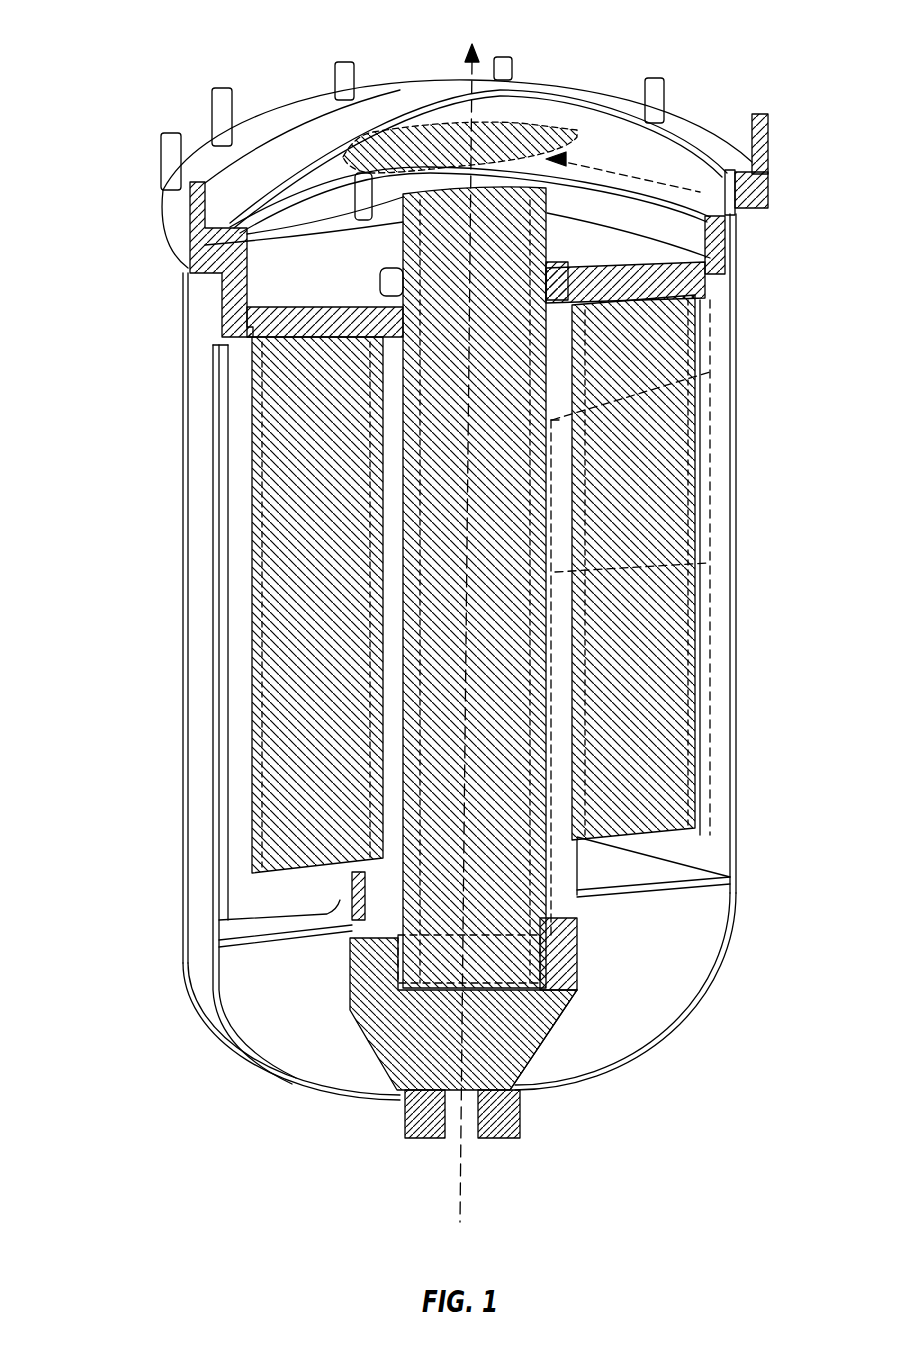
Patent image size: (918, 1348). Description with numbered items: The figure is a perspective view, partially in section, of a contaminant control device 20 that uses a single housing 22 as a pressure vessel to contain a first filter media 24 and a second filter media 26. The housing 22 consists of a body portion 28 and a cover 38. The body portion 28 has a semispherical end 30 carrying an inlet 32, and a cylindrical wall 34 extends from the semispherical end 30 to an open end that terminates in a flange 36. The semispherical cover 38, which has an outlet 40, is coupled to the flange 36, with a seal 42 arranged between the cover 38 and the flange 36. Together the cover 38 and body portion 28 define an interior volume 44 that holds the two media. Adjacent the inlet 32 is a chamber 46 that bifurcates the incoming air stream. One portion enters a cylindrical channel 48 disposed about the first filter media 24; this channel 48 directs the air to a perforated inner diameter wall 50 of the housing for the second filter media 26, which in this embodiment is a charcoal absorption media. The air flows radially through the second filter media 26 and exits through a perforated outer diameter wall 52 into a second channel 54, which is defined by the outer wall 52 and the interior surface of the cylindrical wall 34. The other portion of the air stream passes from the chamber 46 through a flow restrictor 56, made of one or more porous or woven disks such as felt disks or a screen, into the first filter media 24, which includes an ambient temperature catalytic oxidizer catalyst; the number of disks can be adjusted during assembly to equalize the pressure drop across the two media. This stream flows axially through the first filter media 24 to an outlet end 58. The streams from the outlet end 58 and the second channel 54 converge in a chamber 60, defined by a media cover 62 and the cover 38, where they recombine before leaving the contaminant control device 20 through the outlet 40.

The contaminant control device 20 is at (118, 46).
The housing 22 is at (720, 94).
The first filter media 24 is at (475, 733).
The second filter media 26 is at (288, 733).
The body portion 28 is at (182, 953).
The semispherical end 30 is at (280, 1076).
The inlet 32 is at (500, 1138).
The cylindrical wall 34 is at (734, 727).
The flange 36 is at (770, 192).
The cover 38 is at (556, 89).
The outlet 40 is at (468, 62).
The seal 42 is at (188, 258).
The interior volume 44 is at (238, 896).
The chamber 46 is at (412, 1050).
The cylindrical channel 48 is at (345, 900).
The perforated inner diameter wall 50 is at (378, 505).
The perforated outer diameter wall 52 is at (212, 540).
The second channel 54 is at (216, 684).
The flow restrictor 56 is at (545, 1023).
The outlet end 58 is at (410, 230).
The chamber 60 is at (350, 158).
The media cover 62 is at (330, 307).